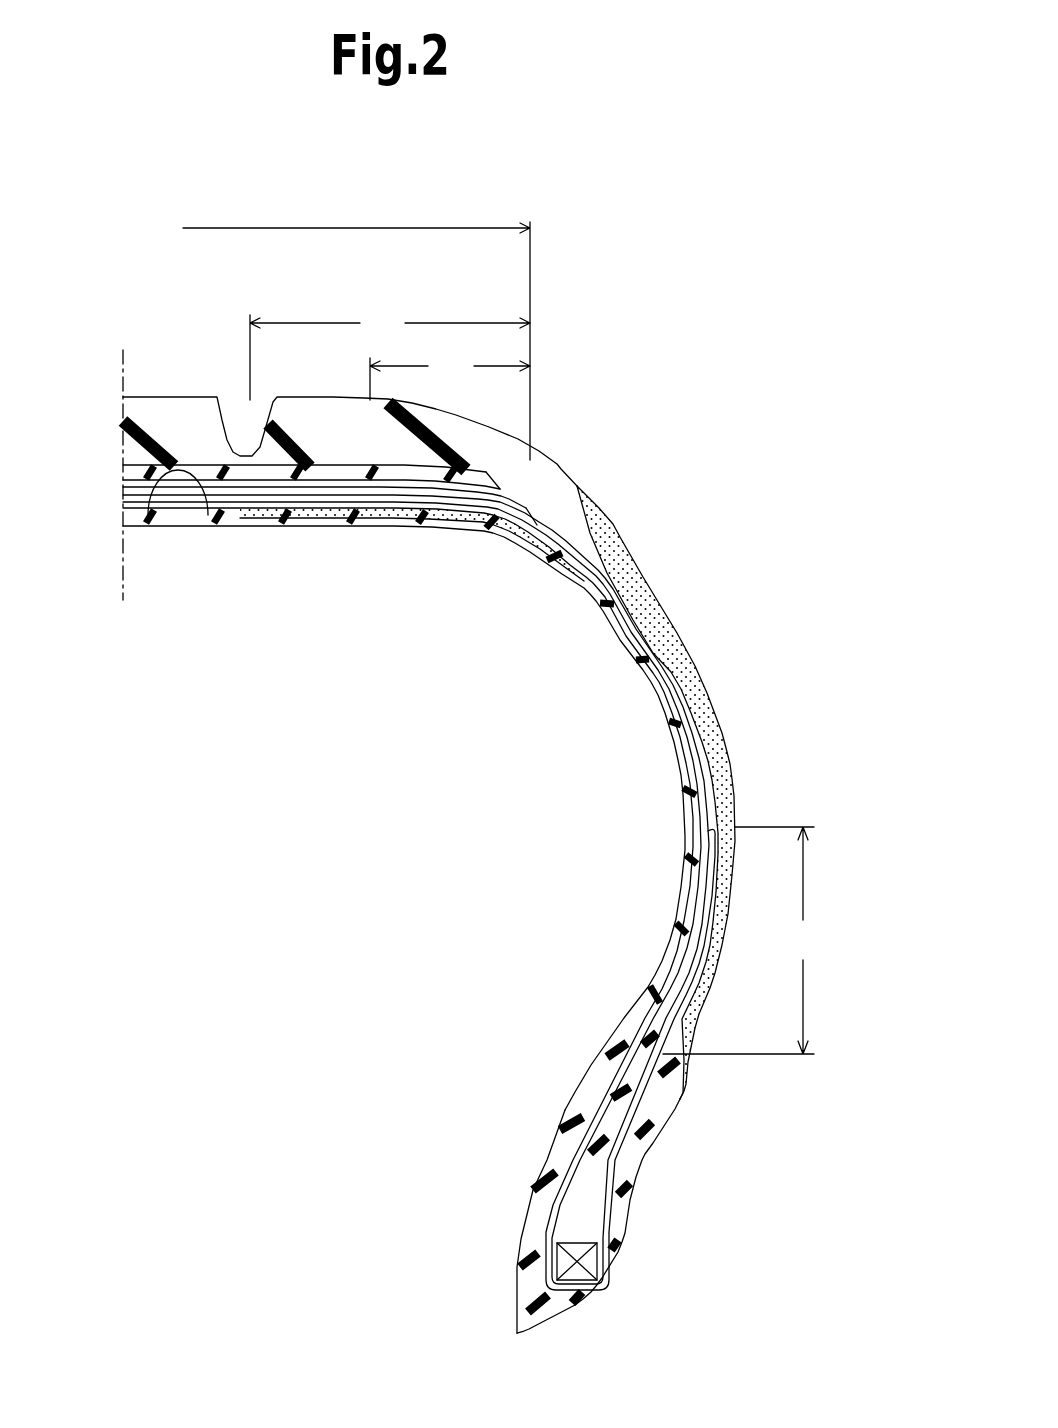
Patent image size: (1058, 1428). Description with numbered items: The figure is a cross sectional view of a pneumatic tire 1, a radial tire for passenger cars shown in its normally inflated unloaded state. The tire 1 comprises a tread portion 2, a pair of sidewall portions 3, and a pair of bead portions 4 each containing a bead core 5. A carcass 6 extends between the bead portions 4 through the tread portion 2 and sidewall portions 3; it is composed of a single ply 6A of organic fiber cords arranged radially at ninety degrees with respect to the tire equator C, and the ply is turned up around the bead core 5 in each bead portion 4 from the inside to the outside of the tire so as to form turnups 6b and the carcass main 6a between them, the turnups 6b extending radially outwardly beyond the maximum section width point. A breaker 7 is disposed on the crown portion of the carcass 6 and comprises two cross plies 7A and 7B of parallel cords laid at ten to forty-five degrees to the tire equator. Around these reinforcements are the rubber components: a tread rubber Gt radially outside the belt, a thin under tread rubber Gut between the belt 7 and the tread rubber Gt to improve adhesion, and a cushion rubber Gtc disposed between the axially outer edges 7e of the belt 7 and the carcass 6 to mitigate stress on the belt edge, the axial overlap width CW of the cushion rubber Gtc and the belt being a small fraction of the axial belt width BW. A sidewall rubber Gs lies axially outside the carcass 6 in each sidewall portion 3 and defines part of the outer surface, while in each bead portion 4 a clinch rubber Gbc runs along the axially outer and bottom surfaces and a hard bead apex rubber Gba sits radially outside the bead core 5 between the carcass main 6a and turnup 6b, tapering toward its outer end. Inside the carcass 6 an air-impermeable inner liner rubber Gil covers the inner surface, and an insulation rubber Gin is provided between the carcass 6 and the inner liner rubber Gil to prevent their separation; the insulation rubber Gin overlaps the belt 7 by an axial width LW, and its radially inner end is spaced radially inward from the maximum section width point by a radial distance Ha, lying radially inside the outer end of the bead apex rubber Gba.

The pneumatic tire 1 is at (439, 798).
The tread portion 2 is at (306, 374).
The sidewall portion 3 is at (753, 755).
The bead portion 4 is at (666, 1188).
The bead core 5 is at (560, 1257).
The carcass 6 is at (419, 892).
The carcass ply 6A is at (419, 892).
The carcass main 6a is at (680, 770).
The carcass ply turnup 6b is at (690, 873).
The breaker 7 is at (364, 524).
The breaker cross ply 7A is at (217, 493).
The breaker cross ply 7B is at (147, 523).
The axially outer edge of the belt 7e is at (527, 492).
The tread rubber Gt is at (197, 397).
The under tread rubber Gut is at (140, 470).
The cushion rubber Gtc is at (530, 513).
The insulation rubber Gin is at (447, 512).
The inner liner rubber Gil is at (610, 620).
The sidewall rubber Gs is at (690, 677).
The bead apex rubber Gba is at (607, 1100).
The clinch rubber Gbc is at (674, 1137).
The tire equator C is at (121, 456).
The axial width of the belt BW is at (329, 334).
The axial overlap width of the insulation rubber and belt LW is at (390, 353).
The axial overlap width of the cushion rubber and belt CW is at (450, 373).
The radial distance Ha is at (742, 940).